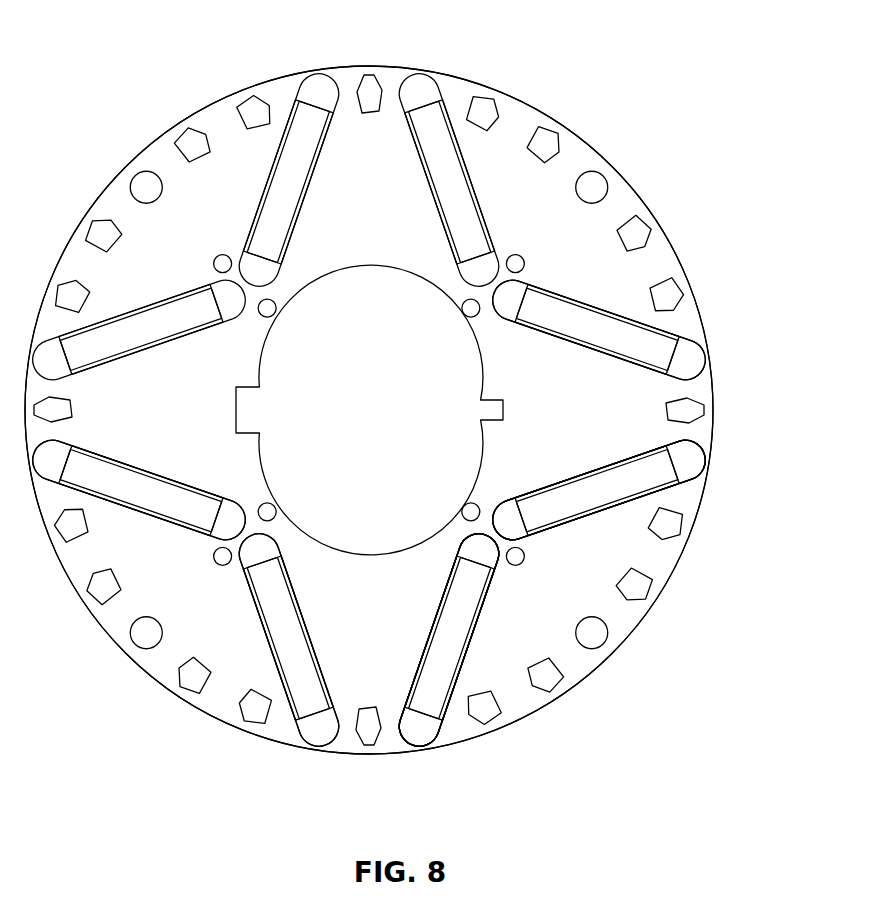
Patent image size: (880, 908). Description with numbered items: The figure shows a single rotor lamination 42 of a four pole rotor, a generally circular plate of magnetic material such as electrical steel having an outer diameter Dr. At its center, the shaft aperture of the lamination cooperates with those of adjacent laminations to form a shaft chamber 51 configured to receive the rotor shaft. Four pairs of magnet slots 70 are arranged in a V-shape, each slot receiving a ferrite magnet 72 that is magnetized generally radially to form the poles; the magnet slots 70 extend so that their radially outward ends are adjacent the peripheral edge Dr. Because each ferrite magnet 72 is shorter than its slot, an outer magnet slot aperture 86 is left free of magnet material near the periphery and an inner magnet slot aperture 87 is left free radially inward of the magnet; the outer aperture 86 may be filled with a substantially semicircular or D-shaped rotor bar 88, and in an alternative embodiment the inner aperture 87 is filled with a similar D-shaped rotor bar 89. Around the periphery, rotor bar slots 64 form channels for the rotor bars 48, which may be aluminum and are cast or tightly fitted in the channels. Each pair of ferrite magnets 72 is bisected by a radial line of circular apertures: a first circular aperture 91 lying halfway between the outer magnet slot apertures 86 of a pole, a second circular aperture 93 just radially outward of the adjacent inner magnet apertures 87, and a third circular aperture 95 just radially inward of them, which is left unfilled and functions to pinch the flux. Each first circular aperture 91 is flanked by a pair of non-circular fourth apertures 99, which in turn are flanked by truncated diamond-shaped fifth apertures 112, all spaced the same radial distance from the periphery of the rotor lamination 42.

The rotor lamination 42 is at (600, 665).
The rotor outer diameter Dr is at (713, 430).
The rotor bars 48 is at (376, 88).
The shaft chamber 51 is at (364, 426).
The rotor bar slots 64 is at (505, 100).
The magnet slots 70 is at (292, 243).
The ferrite magnets 72 is at (300, 190).
The outer magnet slot aperture 86 is at (698, 350).
The inner magnet slot aperture 87 is at (512, 518).
The D-shaped rotor bar 88 is at (686, 374).
The D-shaped rotor bar 89 is at (233, 512).
The first circular aperture 91 is at (146, 650).
The second circular aperture 93 is at (222, 568).
The third circular aperture 95 is at (280, 508).
The fourth apertures 99 is at (104, 604).
The fifth apertures 112 is at (690, 527).